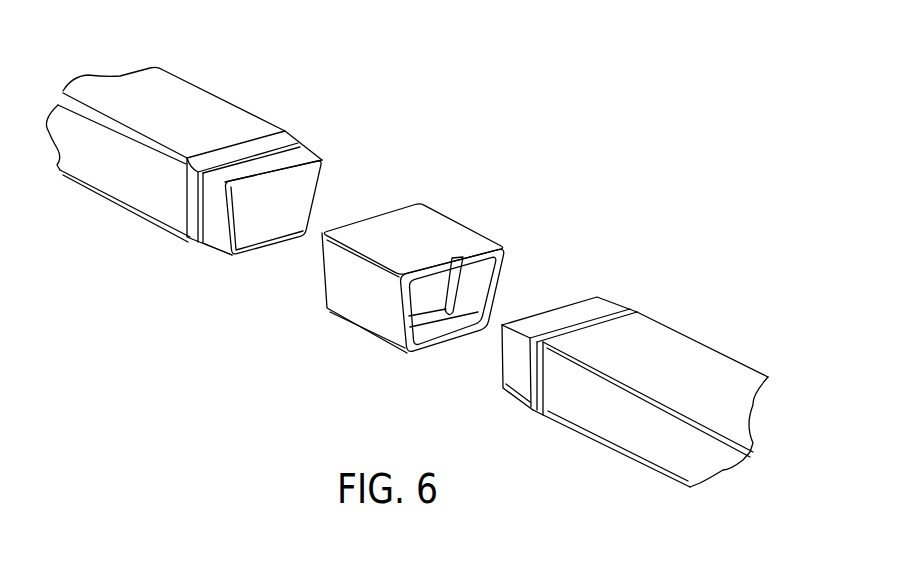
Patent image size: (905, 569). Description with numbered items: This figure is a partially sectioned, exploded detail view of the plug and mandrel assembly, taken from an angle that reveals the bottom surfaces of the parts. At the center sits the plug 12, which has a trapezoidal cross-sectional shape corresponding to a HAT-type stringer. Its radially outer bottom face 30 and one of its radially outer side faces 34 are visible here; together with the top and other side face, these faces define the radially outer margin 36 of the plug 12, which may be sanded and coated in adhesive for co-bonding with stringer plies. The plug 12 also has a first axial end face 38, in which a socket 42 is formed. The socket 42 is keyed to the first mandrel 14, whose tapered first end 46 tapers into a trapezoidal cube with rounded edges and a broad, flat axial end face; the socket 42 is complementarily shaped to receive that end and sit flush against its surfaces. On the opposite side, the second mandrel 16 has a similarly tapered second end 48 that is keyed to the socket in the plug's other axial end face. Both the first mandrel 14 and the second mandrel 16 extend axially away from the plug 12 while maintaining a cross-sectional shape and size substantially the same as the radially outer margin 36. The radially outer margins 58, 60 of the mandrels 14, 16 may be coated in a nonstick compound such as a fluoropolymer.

The plug 12 is at (423, 259).
The first mandrel 14 is at (635, 385).
The second mandrel 16 is at (204, 139).
The radially outer bottom face 30 is at (408, 230).
The radially outer side face 34 is at (342, 280).
The radially outer margin 36 is at (485, 231).
The first axial end face 38 is at (430, 288).
The socket 42 is at (433, 328).
The tapered first end 46 is at (615, 288).
The tapered second end 48 is at (312, 132).
The radially outer margin 58 is at (597, 456).
The radially outer margin 60 is at (120, 213).